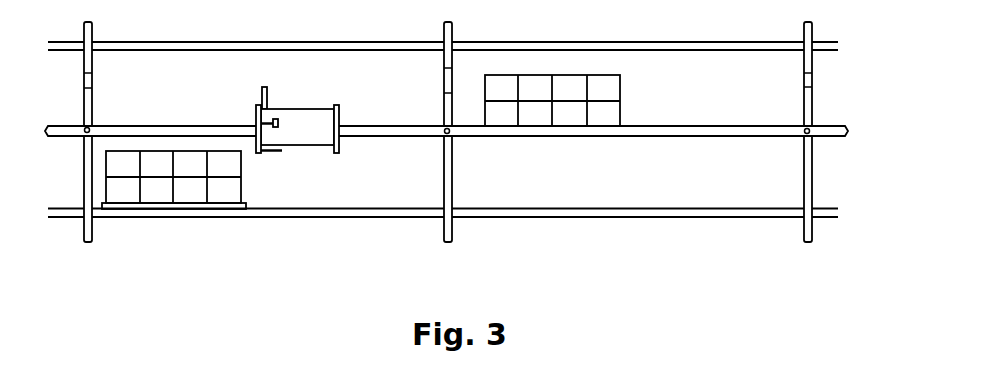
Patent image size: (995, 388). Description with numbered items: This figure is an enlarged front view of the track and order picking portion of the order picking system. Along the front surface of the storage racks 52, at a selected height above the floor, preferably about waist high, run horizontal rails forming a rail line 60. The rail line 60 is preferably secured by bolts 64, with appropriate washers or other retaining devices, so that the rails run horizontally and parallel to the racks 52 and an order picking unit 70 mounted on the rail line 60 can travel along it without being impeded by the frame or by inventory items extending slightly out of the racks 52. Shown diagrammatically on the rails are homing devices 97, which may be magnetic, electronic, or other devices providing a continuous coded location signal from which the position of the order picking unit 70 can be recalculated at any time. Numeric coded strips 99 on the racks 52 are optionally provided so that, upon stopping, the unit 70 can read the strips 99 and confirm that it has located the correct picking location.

The storage racks 52 is at (178, 96).
The rail line 60 is at (404, 133).
The bolts 64 is at (85, 133).
The order picking unit 70 is at (303, 141).
The homing device 97 is at (444, 73).
The numeric coded strips 99 is at (84, 81).